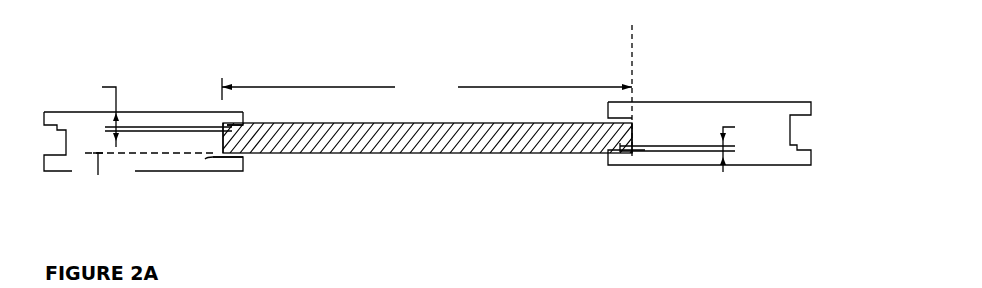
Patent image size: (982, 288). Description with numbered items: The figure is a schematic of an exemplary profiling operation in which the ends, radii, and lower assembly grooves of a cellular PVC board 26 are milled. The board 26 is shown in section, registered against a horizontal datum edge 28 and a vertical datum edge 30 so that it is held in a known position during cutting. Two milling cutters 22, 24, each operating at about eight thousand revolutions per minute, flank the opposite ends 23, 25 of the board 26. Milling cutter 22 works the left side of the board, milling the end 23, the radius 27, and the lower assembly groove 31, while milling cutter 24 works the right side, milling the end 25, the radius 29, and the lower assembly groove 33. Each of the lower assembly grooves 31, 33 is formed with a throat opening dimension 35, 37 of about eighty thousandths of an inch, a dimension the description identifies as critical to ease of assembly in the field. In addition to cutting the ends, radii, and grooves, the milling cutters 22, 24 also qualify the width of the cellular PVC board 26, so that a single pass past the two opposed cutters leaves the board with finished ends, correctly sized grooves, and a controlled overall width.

The milling cutter 22 is at (145, 178).
The end of cellular PVC board 23 is at (230, 128).
The milling cutter 24 is at (710, 175).
The end of cellular PVC board 25 is at (632, 133).
The cellular PVC board 26 is at (406, 134).
The radius 27 is at (222, 153).
The horizontal datum edge 28 is at (150, 172).
The radius 29 is at (632, 126).
The vertical datum edge 30 is at (634, 50).
The lower assembly groove 31 is at (226, 138).
The lower assembly groove 33 is at (640, 140).
The throat opening dimension 35 is at (71, 79).
The throat opening dimension 37 is at (770, 110).